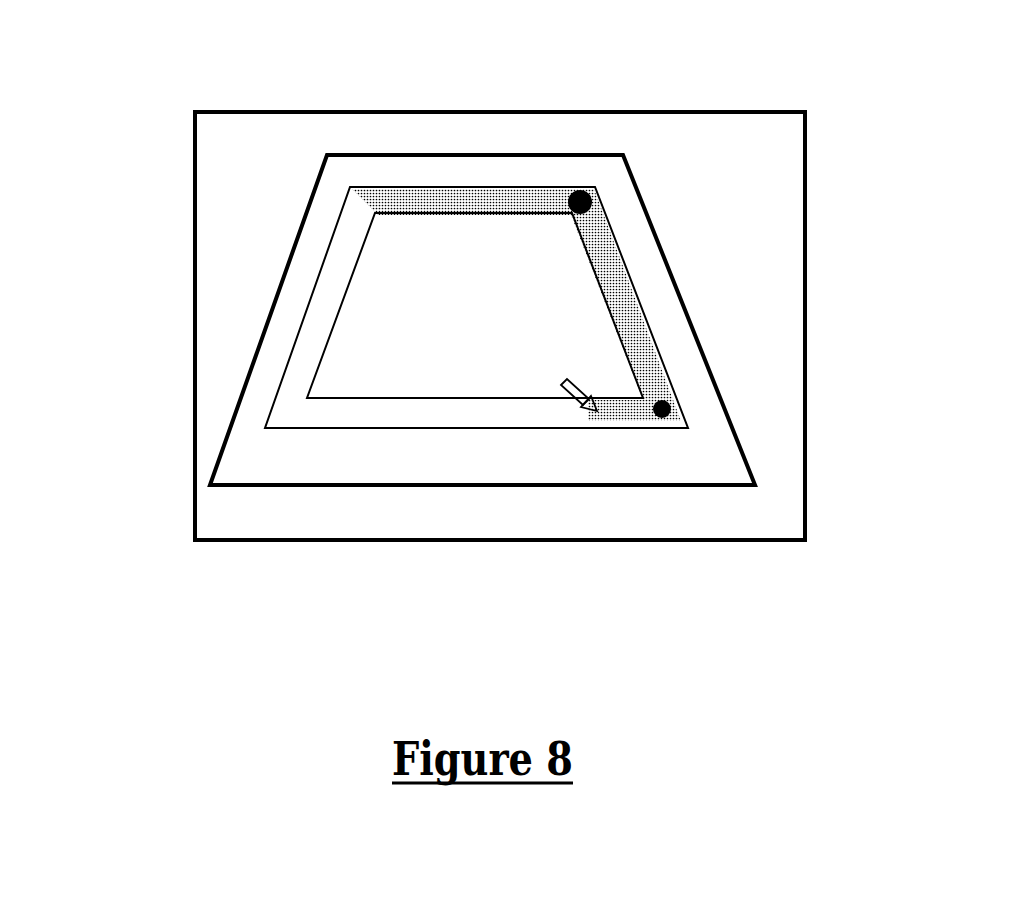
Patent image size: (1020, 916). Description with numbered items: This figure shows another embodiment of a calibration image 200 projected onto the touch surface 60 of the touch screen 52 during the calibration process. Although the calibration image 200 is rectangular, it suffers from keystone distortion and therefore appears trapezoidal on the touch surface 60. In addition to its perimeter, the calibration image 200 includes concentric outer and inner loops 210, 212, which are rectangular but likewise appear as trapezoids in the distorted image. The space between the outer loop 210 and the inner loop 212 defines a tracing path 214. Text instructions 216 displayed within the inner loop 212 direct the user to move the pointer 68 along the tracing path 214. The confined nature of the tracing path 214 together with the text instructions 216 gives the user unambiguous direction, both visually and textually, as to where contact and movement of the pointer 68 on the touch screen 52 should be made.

The touch screen 52 is at (200, 100).
The touch surface 60 is at (280, 157).
The calibration image 200 is at (222, 387).
The outer loop 210 is at (382, 428).
The inner loop 212 is at (450, 398).
The tracing path 214 is at (520, 413).
The text instructions 216 is at (579, 318).
The pointer 68 is at (571, 400).